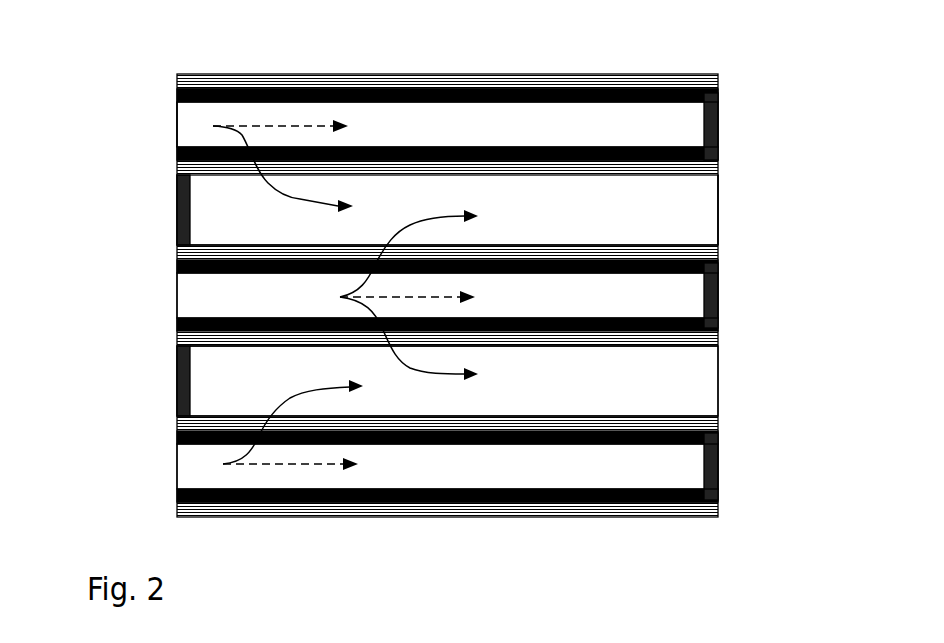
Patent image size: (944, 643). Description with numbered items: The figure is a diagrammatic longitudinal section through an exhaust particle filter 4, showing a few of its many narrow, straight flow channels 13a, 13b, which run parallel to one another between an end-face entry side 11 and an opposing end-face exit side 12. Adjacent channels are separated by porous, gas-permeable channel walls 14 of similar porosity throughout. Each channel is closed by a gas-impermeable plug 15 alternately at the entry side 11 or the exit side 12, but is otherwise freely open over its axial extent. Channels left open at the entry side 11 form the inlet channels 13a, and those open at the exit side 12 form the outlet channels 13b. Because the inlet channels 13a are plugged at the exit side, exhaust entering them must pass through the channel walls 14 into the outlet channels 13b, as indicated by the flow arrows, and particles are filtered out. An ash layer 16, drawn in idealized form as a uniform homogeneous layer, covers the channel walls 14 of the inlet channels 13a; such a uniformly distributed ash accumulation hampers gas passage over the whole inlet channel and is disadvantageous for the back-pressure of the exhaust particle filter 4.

The exhaust particle filter 4 is at (100, 82).
The entry side 11 is at (133, 152).
The exit side 12 is at (795, 157).
The inlet channels 13a is at (447, 295).
The outlet channels 13b is at (447, 295).
The channel walls 14 is at (197, 255).
The plug 15 is at (718, 112).
The ash layer 16 is at (677, 275).